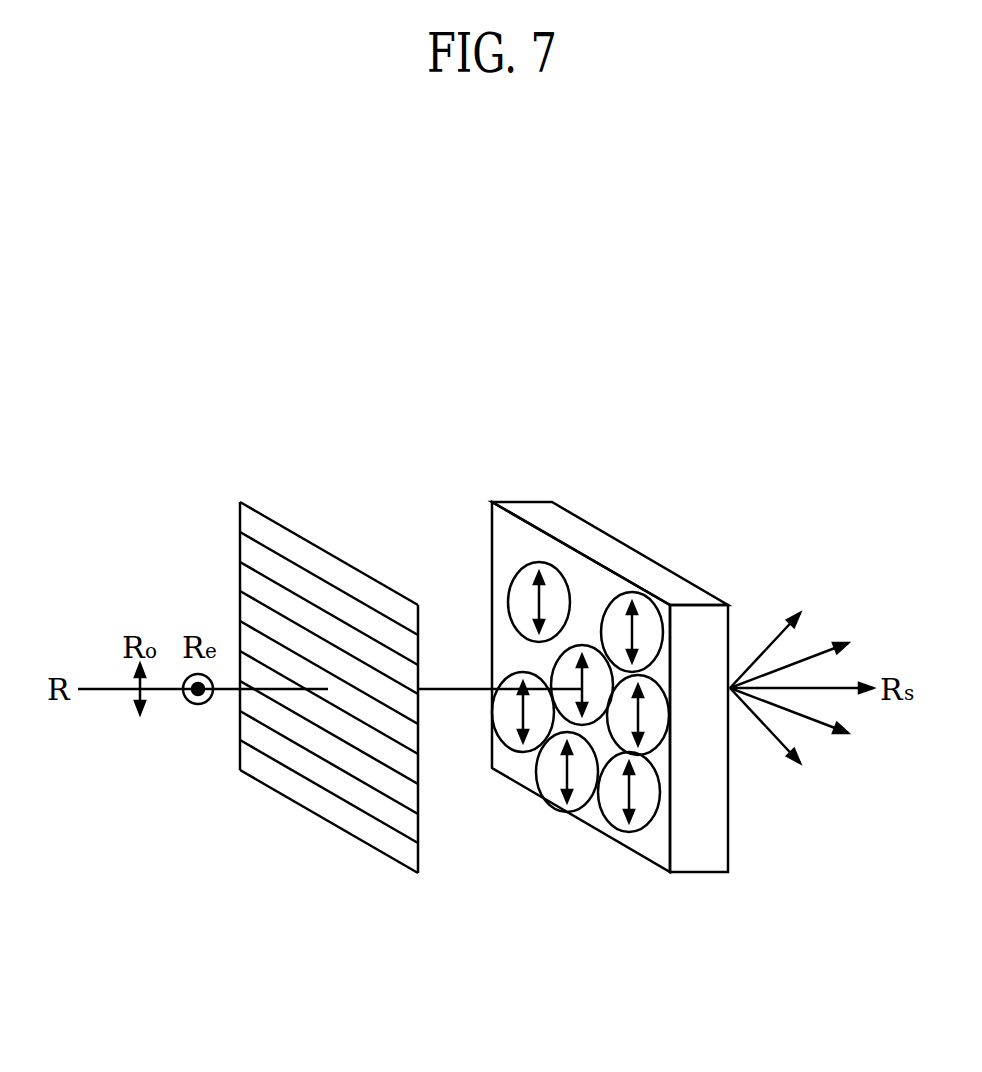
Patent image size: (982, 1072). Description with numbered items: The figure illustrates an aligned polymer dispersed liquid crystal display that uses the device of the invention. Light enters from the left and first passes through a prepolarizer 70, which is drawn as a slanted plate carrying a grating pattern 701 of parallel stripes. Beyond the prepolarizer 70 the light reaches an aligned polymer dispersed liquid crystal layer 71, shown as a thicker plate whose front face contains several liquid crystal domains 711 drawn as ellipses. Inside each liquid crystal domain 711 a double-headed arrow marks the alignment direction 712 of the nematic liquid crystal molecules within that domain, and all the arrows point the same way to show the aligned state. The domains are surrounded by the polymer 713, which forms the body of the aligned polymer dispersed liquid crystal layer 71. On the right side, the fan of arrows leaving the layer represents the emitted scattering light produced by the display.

The prepolarizer 70 is at (329, 671).
The grating pattern 701 is at (318, 790).
The aligned polymer dispersed liquid crystal layer 71 is at (595, 702).
The liquid crystal domain 711 is at (535, 778).
The alignment direction of nematic liquid crystal molecule 712 is at (632, 793).
The polymer 713 is at (652, 845).